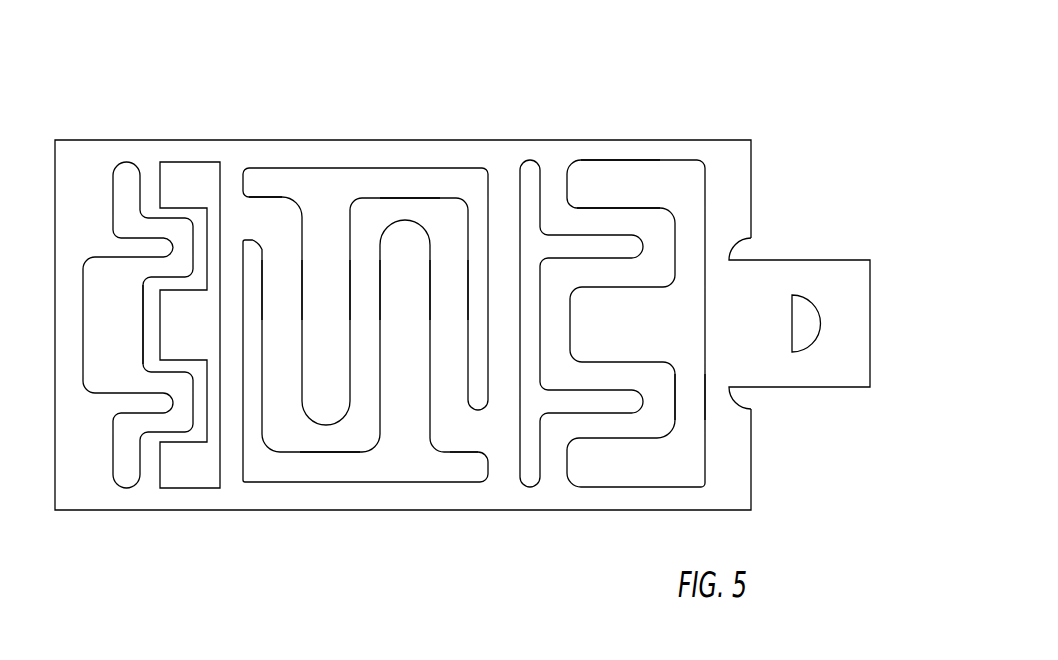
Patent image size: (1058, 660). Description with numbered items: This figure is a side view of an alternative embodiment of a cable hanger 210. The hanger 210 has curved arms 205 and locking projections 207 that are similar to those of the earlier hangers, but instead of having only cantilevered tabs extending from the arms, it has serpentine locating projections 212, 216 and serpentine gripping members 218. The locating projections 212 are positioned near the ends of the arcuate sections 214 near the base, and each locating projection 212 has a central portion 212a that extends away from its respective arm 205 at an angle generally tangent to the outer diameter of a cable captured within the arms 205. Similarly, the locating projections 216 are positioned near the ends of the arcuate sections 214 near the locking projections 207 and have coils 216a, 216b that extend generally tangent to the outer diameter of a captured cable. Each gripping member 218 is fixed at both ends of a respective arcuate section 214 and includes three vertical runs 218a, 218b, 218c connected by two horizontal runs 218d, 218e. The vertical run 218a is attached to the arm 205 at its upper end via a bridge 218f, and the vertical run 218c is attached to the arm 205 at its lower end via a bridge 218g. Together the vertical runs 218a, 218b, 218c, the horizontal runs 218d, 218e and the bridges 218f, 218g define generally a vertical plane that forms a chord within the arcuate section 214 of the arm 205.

The cable hanger 210 is at (712, 80).
The arcuate section 214 is at (363, 500).
The locking projection 207 is at (830, 380).
The curved arm 205 is at (195, 495).
The locating projection 212 is at (173, 450).
The central portion 212a is at (150, 330).
The gripping member 218 is at (302, 468).
The vertical run 218a is at (282, 287).
The vertical run 218b is at (365, 285).
The vertical run 218c is at (443, 223).
The horizontal run 218d is at (327, 435).
The horizontal run 218e is at (412, 203).
The bridge 218f is at (268, 210).
The bridge 218g is at (470, 435).
The locating projection 216 is at (602, 475).
The coil 216a is at (612, 218).
The coil 216b is at (658, 424).